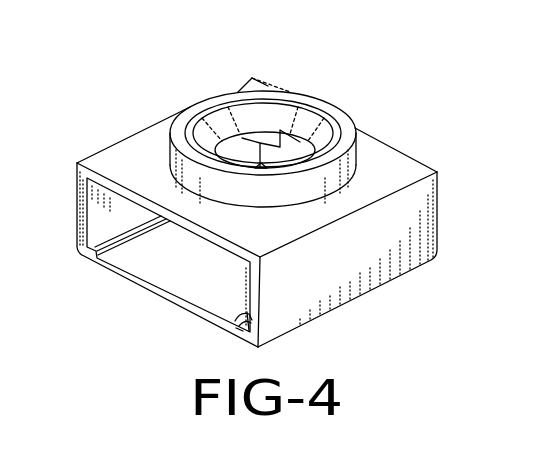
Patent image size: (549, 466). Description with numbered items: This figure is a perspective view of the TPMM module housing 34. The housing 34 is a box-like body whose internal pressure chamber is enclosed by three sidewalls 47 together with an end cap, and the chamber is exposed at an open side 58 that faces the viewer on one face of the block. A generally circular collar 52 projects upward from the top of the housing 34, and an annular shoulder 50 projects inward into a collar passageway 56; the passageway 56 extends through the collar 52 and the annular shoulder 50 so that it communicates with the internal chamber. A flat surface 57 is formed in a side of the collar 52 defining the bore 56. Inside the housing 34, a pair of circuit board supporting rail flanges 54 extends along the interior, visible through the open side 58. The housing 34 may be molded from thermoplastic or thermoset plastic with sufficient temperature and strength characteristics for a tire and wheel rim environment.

The module housing 34 is at (137, 153).
The sidewalls 47 is at (98, 217).
The annular shoulder 50 is at (313, 125).
The circular collar 52 is at (342, 165).
The circuit board supporting rail flanges 54 is at (128, 240).
The collar passageway 56 is at (243, 160).
The flat surface 57 is at (306, 98).
The open side 58 is at (180, 268).